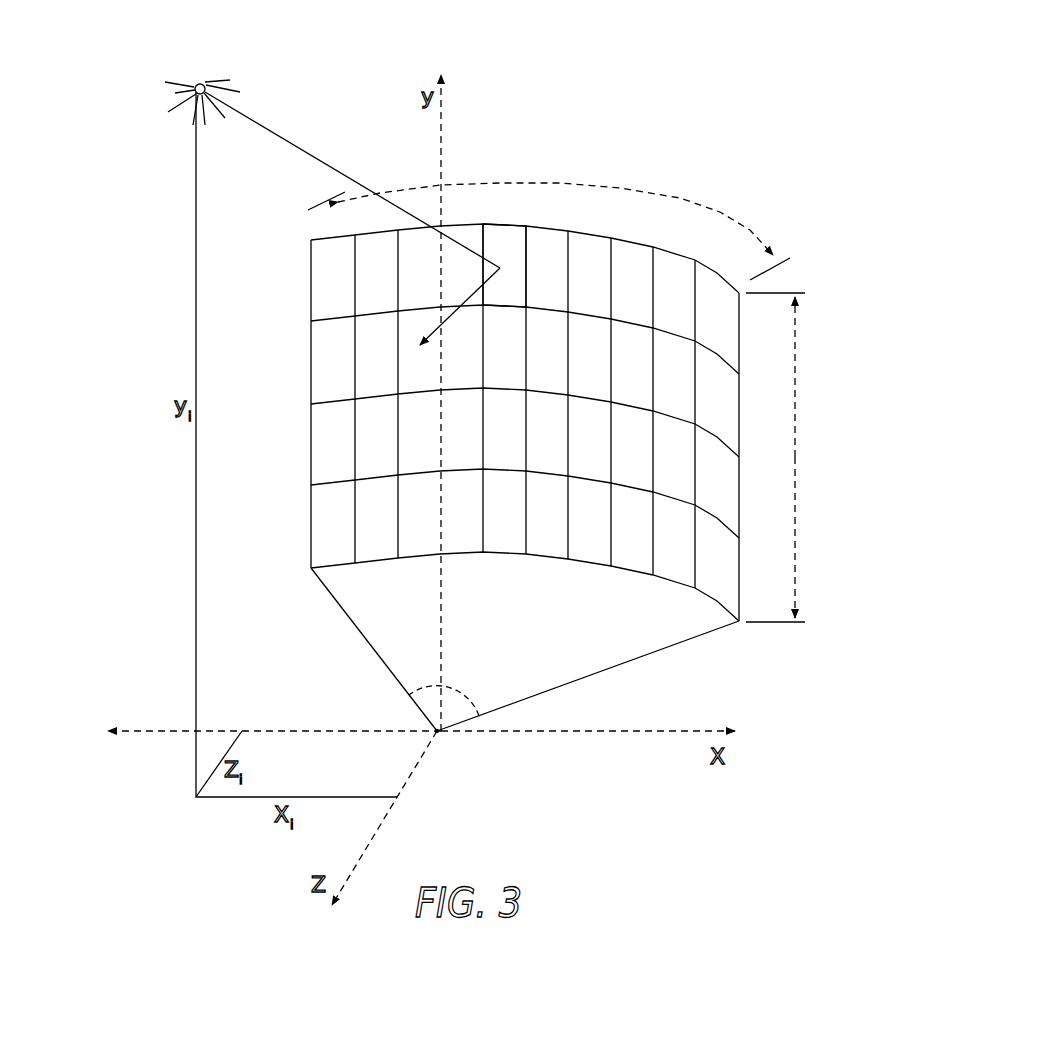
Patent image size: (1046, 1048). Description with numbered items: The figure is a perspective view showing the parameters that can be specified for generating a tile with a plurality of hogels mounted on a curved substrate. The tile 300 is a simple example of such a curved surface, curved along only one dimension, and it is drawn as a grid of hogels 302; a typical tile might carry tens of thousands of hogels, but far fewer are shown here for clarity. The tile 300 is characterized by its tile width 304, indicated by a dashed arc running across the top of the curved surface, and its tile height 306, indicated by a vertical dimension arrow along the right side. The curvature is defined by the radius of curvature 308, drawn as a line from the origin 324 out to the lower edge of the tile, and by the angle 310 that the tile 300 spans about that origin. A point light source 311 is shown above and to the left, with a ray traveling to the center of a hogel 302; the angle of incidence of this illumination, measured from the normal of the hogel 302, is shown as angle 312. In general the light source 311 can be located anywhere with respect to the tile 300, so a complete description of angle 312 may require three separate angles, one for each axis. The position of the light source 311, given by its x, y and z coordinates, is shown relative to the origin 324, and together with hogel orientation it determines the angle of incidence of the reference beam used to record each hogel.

The tile 300 is at (330, 239).
The hogel 302 is at (507, 223).
The tile width 304 is at (575, 168).
The tile height 306 is at (843, 481).
The radius of curvature 308 is at (618, 667).
The angle 310 is at (460, 690).
The light source 311 is at (201, 83).
The angle of incidence 312 is at (486, 268).
The origin 324 is at (437, 731).